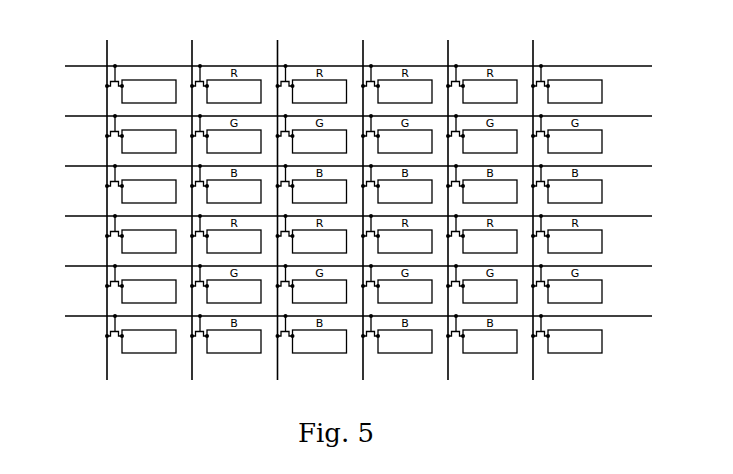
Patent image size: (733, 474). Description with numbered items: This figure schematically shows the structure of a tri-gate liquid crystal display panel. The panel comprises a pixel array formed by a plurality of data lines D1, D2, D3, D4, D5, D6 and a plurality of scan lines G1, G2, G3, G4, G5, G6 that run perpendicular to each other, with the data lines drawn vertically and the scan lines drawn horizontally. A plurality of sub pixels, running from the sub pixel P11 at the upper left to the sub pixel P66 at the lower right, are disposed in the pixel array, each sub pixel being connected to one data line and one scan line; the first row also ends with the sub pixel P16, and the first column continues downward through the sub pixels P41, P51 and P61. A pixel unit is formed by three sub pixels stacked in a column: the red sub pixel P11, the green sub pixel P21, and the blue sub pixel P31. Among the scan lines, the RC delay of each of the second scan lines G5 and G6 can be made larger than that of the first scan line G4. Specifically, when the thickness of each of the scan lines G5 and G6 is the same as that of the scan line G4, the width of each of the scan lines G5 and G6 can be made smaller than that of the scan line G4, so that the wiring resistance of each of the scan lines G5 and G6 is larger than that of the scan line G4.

The data line D1 is at (105, 199).
The data line D2 is at (190, 199).
The data line D3 is at (279, 199).
The data line D4 is at (365, 199).
The data line D5 is at (447, 200).
The data line D6 is at (532, 200).
The scan line G1 is at (347, 66).
The scan line G2 is at (347, 116).
The scan line G3 is at (347, 166).
The first scan line G4 is at (347, 216).
The second scan line G5 is at (347, 266).
The second scan line G6 is at (347, 316).
The red sub pixel P11 is at (140, 83).
The sub pixel P16 is at (566, 83).
The green sub pixel P21 is at (140, 133).
The blue sub pixel P31 is at (140, 183).
The sub pixel P41 is at (140, 233).
The sub pixel P51 is at (140, 283).
The sub pixel P61 is at (140, 333).
The sub pixel P66 is at (566, 333).